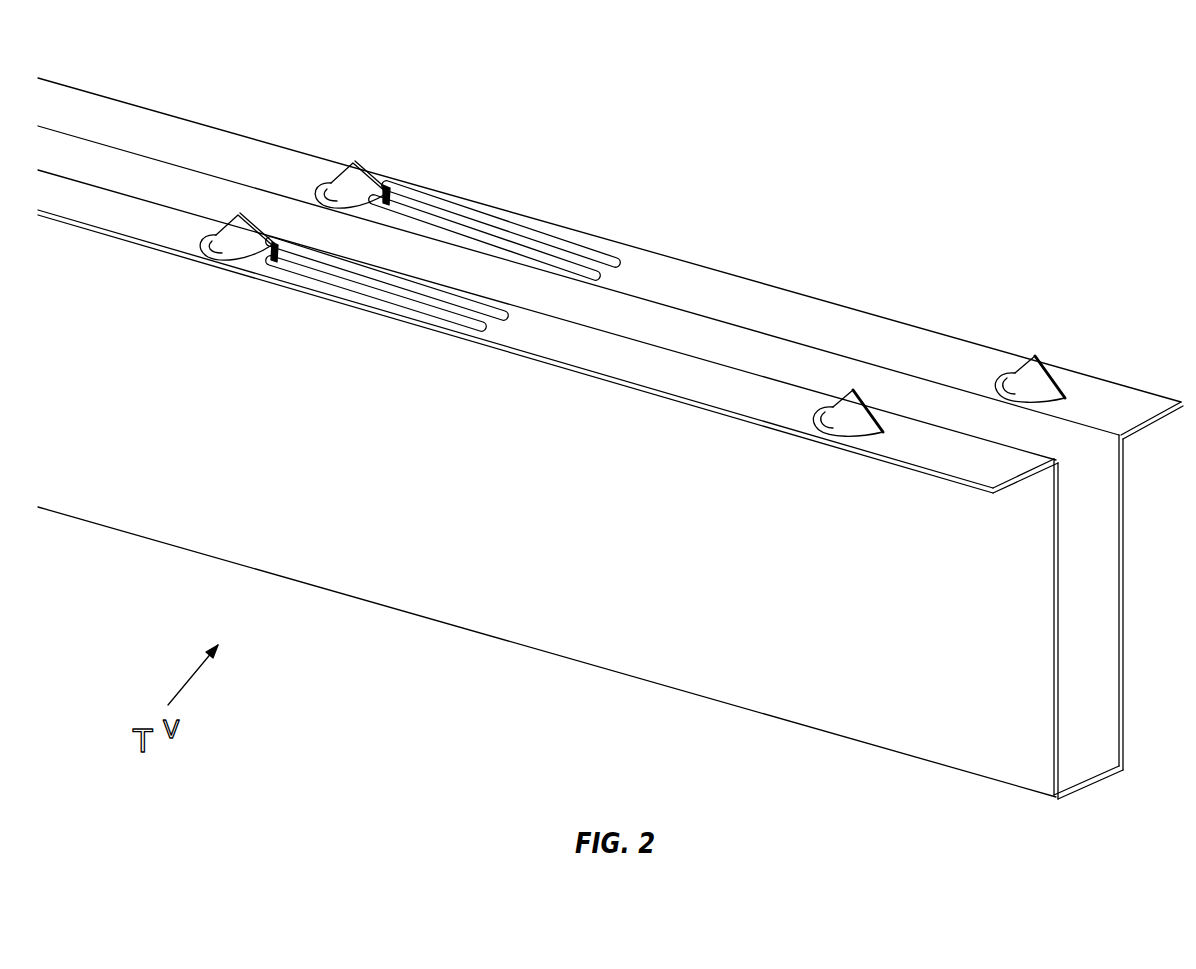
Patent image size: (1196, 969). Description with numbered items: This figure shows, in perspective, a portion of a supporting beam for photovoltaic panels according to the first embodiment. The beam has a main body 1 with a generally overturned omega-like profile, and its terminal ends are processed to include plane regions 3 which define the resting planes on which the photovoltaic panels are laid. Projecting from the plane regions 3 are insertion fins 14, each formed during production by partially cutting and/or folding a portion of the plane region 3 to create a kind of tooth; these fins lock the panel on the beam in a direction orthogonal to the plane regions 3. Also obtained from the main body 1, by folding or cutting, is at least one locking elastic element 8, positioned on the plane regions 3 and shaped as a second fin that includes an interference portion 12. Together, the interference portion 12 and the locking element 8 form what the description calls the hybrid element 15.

The main body 1 is at (1065, 598).
The plane region 3 is at (597, 347).
The locking elastic element 8 is at (512, 214).
The interference portion 12 is at (390, 181).
The insertion fin 14 is at (342, 158).
The hybrid element 15 is at (395, 263).